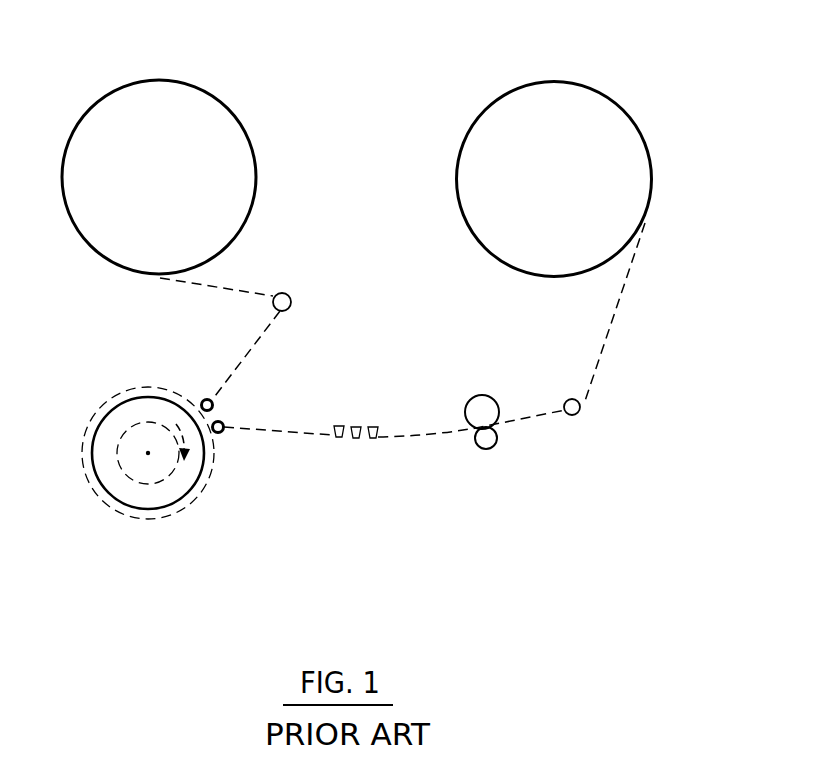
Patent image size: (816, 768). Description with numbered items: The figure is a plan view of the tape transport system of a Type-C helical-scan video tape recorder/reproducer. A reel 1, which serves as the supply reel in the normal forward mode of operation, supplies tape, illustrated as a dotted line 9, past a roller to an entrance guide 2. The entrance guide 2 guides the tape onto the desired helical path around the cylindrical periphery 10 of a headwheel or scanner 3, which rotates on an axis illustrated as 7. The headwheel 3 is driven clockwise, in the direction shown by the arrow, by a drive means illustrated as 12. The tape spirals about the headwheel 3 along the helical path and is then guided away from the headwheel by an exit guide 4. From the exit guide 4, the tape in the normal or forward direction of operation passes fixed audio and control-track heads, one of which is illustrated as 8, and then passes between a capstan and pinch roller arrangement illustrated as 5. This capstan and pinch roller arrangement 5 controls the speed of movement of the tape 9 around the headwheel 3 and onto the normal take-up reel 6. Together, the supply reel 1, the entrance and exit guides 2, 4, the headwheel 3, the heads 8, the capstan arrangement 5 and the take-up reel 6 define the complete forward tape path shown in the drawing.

The reel 1 is at (101, 85).
The entrance guide 2 is at (203, 385).
The headwheel 3 is at (134, 471).
The exit guide 4 is at (227, 448).
The capstan and pinch roller arrangement 5 is at (462, 446).
The take-up reel 6 is at (602, 83).
The axis 7 is at (143, 447).
The fixed audio and control-track head 8 is at (374, 425).
The tape 9 is at (622, 293).
The cylindrical periphery 10 is at (188, 498).
The drive means 12 is at (115, 458).